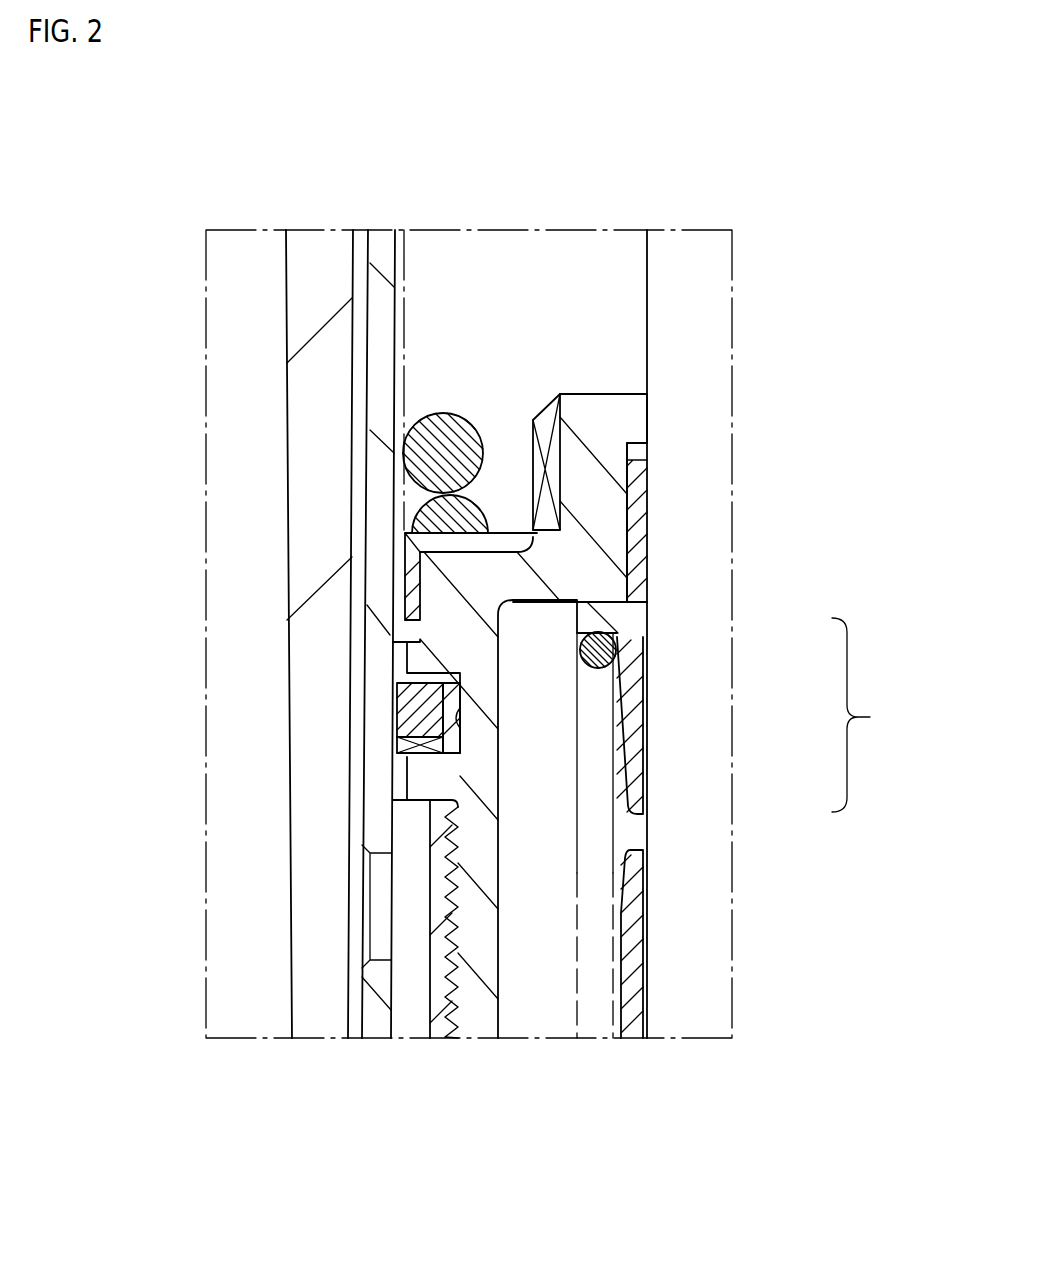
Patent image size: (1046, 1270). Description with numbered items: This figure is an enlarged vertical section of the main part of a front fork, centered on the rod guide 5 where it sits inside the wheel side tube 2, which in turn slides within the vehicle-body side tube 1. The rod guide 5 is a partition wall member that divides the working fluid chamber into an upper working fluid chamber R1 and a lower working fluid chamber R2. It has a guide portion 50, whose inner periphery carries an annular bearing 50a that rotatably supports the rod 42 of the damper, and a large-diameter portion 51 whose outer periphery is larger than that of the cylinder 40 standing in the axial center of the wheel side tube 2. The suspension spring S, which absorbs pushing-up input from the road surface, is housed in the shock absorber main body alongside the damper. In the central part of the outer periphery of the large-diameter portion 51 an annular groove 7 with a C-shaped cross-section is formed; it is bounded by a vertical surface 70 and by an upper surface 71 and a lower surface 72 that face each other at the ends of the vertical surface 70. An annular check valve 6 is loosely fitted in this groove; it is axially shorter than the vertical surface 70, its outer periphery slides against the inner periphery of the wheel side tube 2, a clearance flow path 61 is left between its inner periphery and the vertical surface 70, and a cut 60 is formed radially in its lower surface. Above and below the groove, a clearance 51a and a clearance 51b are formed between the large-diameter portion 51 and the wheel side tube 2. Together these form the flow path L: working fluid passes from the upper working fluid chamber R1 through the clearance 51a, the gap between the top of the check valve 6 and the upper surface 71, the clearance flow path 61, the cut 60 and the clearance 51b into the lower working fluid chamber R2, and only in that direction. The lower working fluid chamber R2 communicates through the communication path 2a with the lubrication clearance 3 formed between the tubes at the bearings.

The vehicle-body side tube 1 is at (280, 270).
The wheel side tube 2 is at (365, 363).
The communication path 2a is at (375, 920).
The lubrication clearance 3 is at (352, 495).
The rod guide 5 is at (577, 368).
The check valve 6 is at (400, 700).
The annular groove 7 is at (867, 715).
The cylinder 40 is at (433, 1007).
The rod 42 is at (647, 307).
The guide portion 50 is at (532, 465).
The annular bearing 50a is at (647, 540).
The large-diameter portion 51 is at (384, 640).
The clearance 51a is at (393, 662).
The clearance 51b is at (376, 800).
The cut 60 is at (423, 743).
The clearance flow path 61 is at (450, 705).
The vertical surface 70 is at (460, 735).
The upper surface 71 is at (460, 702).
The lower surface 72 is at (420, 757).
The flow path L is at (363, 755).
The upper working fluid chamber R1 is at (414, 273).
The lower working fluid chamber R2 is at (405, 967).
The suspension spring S is at (410, 457).